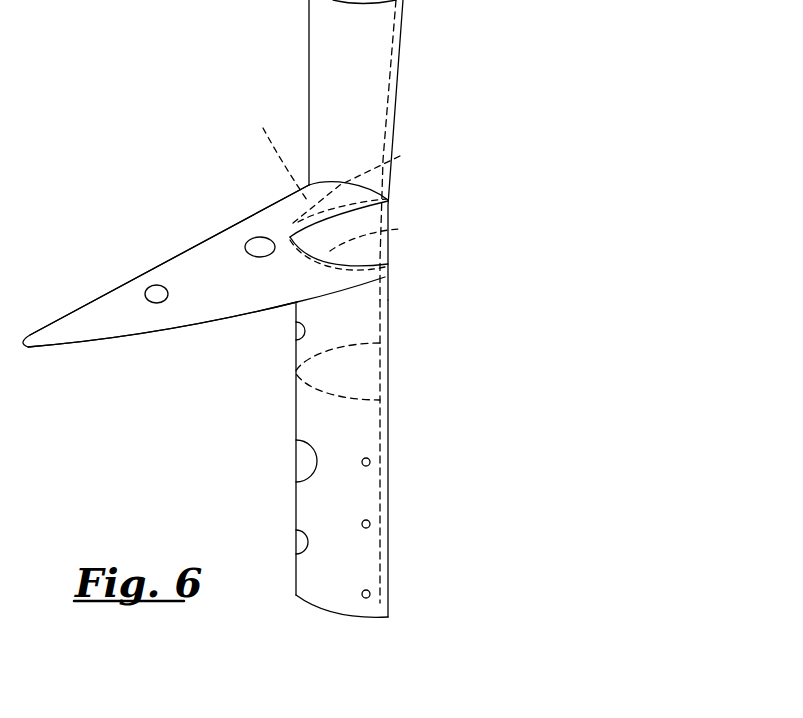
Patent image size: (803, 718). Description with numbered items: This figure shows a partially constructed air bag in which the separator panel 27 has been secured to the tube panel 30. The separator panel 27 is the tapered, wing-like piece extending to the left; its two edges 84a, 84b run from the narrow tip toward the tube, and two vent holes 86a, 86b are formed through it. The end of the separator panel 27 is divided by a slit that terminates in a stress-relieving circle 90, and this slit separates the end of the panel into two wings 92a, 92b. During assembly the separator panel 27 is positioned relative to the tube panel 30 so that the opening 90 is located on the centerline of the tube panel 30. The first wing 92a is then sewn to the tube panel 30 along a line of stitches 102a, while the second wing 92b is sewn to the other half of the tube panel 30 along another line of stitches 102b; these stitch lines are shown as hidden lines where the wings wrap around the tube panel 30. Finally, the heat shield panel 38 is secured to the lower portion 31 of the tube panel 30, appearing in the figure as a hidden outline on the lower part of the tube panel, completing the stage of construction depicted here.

The separator panel 27 is at (105, 290).
The tube panel 30 is at (392, 83).
The lower portion of the tube panel 31 is at (317, 592).
The heat shield panel 38 is at (357, 428).
The separator panel edge 84a is at (193, 313).
The separator panel edge 84b is at (153, 272).
The vent hole 86a is at (157, 300).
The vent hole 86b is at (260, 250).
The stress-relieving circle 90 is at (287, 238).
The wing 92a is at (330, 285).
The wing 92b is at (276, 150).
The line of stitches 102a is at (400, 229).
The line of stitches 102b is at (400, 156).